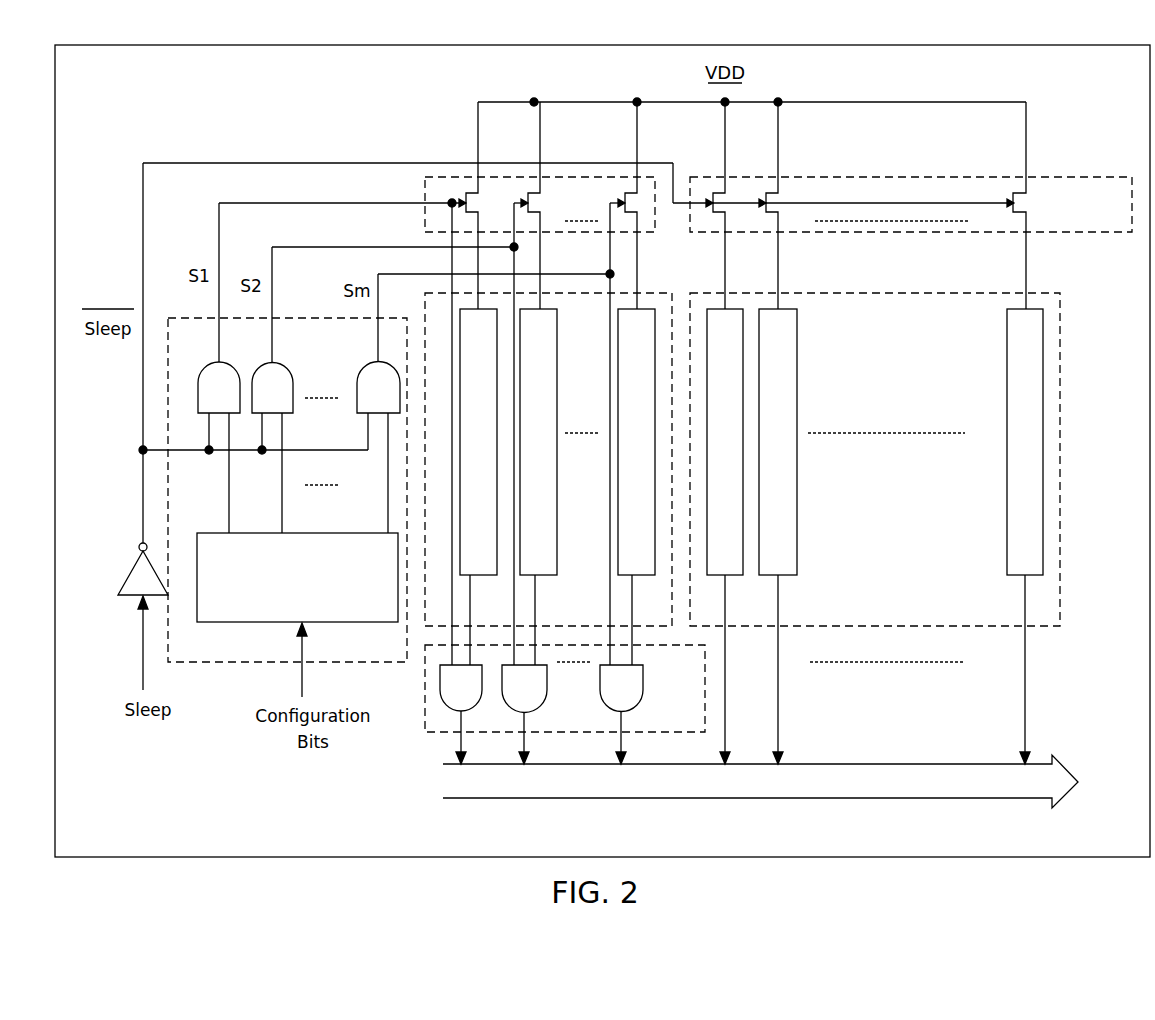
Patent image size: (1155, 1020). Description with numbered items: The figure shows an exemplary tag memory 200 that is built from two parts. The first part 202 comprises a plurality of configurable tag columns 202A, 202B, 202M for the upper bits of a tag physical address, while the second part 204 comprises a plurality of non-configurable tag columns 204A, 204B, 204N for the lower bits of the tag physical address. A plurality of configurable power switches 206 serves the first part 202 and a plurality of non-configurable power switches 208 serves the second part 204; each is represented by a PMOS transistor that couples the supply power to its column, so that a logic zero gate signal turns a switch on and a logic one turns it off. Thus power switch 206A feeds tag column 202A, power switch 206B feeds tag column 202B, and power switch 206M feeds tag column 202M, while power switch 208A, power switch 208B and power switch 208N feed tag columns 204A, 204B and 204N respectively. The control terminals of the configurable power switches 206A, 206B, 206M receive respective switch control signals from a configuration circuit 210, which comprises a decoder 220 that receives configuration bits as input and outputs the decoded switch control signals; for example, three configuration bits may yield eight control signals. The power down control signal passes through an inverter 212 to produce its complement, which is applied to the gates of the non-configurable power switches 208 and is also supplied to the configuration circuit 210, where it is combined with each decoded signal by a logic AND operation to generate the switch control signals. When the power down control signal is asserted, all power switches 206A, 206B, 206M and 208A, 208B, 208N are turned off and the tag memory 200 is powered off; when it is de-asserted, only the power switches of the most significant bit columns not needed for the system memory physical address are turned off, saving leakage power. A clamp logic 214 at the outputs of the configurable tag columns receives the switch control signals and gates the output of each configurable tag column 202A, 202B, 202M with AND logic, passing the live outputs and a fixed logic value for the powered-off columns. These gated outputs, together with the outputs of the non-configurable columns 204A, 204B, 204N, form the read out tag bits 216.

The tag memory 200 is at (178, 112).
The first part 202 is at (573, 602).
The configurable tag column 202A is at (462, 572).
The configurable tag column 202B is at (558, 450).
The configurable tag column 202M is at (648, 307).
The second part 204 is at (868, 602).
The non-configurable tag column 204A is at (733, 307).
The non-configurable tag column 204B is at (797, 421).
The non-configurable tag column 204N is at (1007, 432).
The configurable power switches 206 is at (563, 201).
The power switch 206A is at (470, 191).
The power switch 206B is at (531, 191).
The power switch 206M is at (627, 191).
The non-configurable power switches 208 is at (1065, 222).
The power switch 208A is at (714, 191).
The power switch 208B is at (767, 191).
The power switch 208N is at (1013, 191).
The configuration circuit 210 is at (308, 365).
The inverter 212 is at (133, 567).
The clamp logic 214 is at (655, 717).
The tag bits 216 is at (803, 794).
The decoder 220 is at (282, 604).